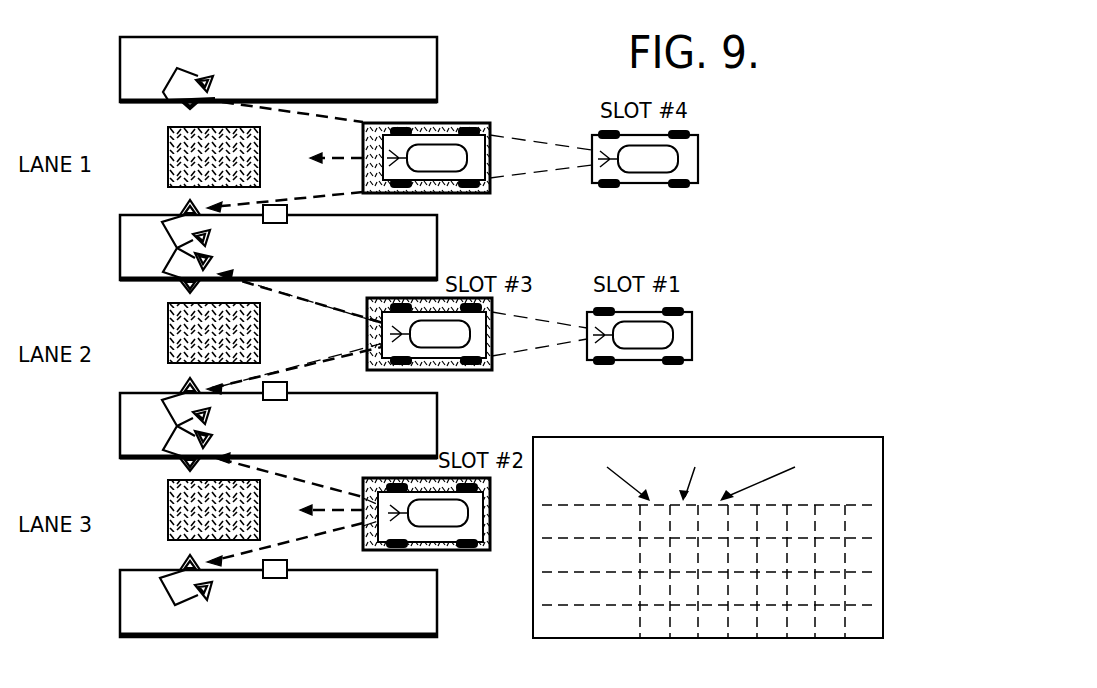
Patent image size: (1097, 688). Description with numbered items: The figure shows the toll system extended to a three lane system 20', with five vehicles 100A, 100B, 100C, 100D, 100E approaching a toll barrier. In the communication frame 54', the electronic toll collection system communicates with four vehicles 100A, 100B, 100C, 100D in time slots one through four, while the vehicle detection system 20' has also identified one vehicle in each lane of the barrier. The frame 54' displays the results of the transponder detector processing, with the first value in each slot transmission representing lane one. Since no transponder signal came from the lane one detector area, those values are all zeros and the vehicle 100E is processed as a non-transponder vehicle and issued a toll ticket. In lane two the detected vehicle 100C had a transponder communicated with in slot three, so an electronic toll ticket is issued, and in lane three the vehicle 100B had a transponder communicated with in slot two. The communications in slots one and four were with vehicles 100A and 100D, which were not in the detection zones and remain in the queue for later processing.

The three lane system 20' is at (245, 358).
The communication frame 54' is at (708, 542).
The vehicle 100A is at (693, 359).
The vehicle 100B is at (440, 550).
The vehicle 100C is at (450, 370).
The vehicle 100D is at (697, 187).
The vehicle 100E is at (492, 125).